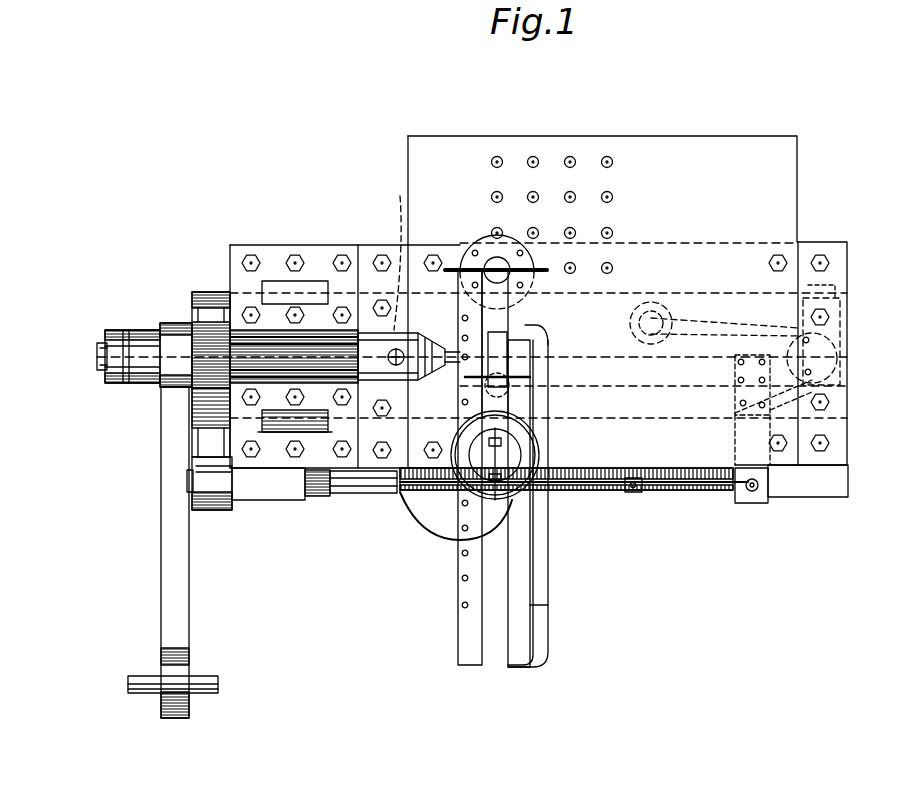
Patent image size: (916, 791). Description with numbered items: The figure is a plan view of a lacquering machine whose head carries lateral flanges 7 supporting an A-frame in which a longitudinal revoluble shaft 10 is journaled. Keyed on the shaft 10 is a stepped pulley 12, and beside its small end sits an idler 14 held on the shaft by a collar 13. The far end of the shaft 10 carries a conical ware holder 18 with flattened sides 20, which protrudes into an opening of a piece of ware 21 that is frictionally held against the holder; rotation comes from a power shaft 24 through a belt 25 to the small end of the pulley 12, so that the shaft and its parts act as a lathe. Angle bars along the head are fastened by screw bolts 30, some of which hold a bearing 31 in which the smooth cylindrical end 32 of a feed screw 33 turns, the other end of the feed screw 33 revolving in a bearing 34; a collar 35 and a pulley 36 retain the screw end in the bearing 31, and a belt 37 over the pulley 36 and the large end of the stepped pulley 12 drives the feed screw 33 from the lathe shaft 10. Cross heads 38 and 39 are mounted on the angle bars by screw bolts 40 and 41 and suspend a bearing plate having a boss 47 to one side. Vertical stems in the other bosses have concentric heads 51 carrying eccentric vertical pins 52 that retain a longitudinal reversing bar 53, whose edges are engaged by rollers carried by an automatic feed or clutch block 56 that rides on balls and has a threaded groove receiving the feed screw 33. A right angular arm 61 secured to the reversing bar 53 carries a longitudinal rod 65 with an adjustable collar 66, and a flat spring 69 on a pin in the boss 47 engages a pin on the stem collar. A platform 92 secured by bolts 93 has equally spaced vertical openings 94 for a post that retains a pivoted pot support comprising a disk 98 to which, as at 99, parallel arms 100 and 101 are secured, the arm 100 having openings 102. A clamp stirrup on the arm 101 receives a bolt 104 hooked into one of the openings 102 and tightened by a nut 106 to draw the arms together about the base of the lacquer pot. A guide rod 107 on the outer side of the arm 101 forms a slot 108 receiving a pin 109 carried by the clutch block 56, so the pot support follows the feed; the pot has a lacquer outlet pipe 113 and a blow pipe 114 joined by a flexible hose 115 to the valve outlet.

The lateral flanges 7 is at (276, 256).
The revoluble shaft 10 is at (98, 355).
The stepped pulley 12 is at (211, 300).
The collar 13 is at (105, 336).
The idler 14 is at (135, 330).
The ware holder 18 is at (428, 332).
The flattened sides 20 is at (442, 345).
The piece of ware 21 is at (522, 332).
The power shaft 24 is at (218, 677).
The belt 25 is at (161, 592).
The screw bolts 30 is at (250, 456).
The bearing 31 is at (290, 500).
The smooth cylindrical end 32 is at (188, 480).
The feed screw 33 is at (680, 492).
The bearing 34 is at (815, 500).
The collar 35 is at (325, 500).
The pulley 36 is at (192, 500).
The belt 37 is at (200, 440).
The cross head 38 is at (370, 246).
The cross head 39 is at (847, 245).
The screw bolts 40 is at (821, 262).
The screw bolts 41 is at (383, 456).
The boss 47 is at (625, 322).
The concentric heads 51 is at (866, 353).
The vertical pins 52 is at (848, 373).
The reversing bar 53 is at (637, 386).
The automatic feed or clutch block 56 is at (500, 522).
The right angular arm 61 is at (745, 500).
The longitudinal rod 65 is at (700, 495).
The adjustable collar 66 is at (632, 498).
The flat spring 69 is at (725, 328).
The platform 92 is at (716, 150).
The bolts 93 is at (778, 263).
The vertical openings 94 is at (570, 162).
The disk 98 is at (498, 242).
The securing points 99 is at (570, 268).
The arm 100 is at (470, 628).
The arm 101 is at (520, 630).
The openings 102 is at (462, 605).
The bolt 104 is at (500, 382).
The nut 106 is at (532, 378).
The guide rod 107 is at (545, 582).
The slot 108 is at (540, 605).
The pin 109 is at (540, 506).
The lacquer outlet pipe 113 is at (502, 458).
The blow pipe 114 is at (680, 466).
The flexible connection or hose 115 is at (452, 510).